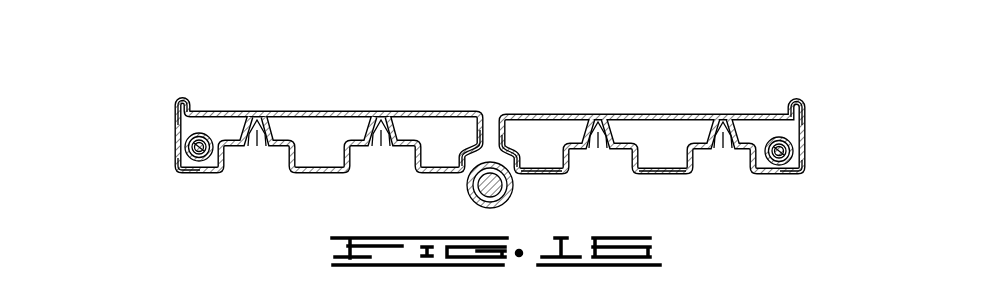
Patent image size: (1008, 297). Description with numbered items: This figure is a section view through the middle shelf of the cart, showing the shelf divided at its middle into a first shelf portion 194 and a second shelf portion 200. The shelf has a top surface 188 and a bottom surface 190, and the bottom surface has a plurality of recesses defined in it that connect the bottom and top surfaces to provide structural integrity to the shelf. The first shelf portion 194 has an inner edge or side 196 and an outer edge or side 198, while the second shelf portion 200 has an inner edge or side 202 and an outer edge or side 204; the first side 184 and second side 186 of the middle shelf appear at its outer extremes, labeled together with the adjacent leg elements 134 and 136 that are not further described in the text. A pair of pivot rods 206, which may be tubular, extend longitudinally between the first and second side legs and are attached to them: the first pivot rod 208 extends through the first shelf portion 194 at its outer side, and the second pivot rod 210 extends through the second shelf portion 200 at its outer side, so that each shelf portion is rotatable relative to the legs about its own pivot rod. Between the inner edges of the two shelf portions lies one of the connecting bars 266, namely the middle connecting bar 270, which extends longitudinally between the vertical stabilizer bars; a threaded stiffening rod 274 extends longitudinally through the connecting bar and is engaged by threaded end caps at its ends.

The second shelf portion 200 is at (415, 127).
The outer edge or side 204 is at (175, 127).
The fastener 136 is at (130, 148).
The second side 186 is at (176, 145).
The pivot rods 206 is at (125, 179).
The second pivot rod 210 is at (187, 167).
The inner edge or side 202 is at (494, 123).
The top surface 188 is at (568, 118).
The first shelf portion 194 is at (650, 127).
The inner edge or side 196 is at (499, 117).
The bottom surface 190 is at (548, 174).
The outer edge or side 198 is at (806, 114).
The fastener 134 is at (840, 147).
The first side 184 is at (806, 146).
The first pivot rod 208 is at (783, 167).
The connecting bars 266 is at (429, 187).
The middle connecting bar 270 is at (470, 200).
The threaded stiffening rod 274 is at (497, 194).